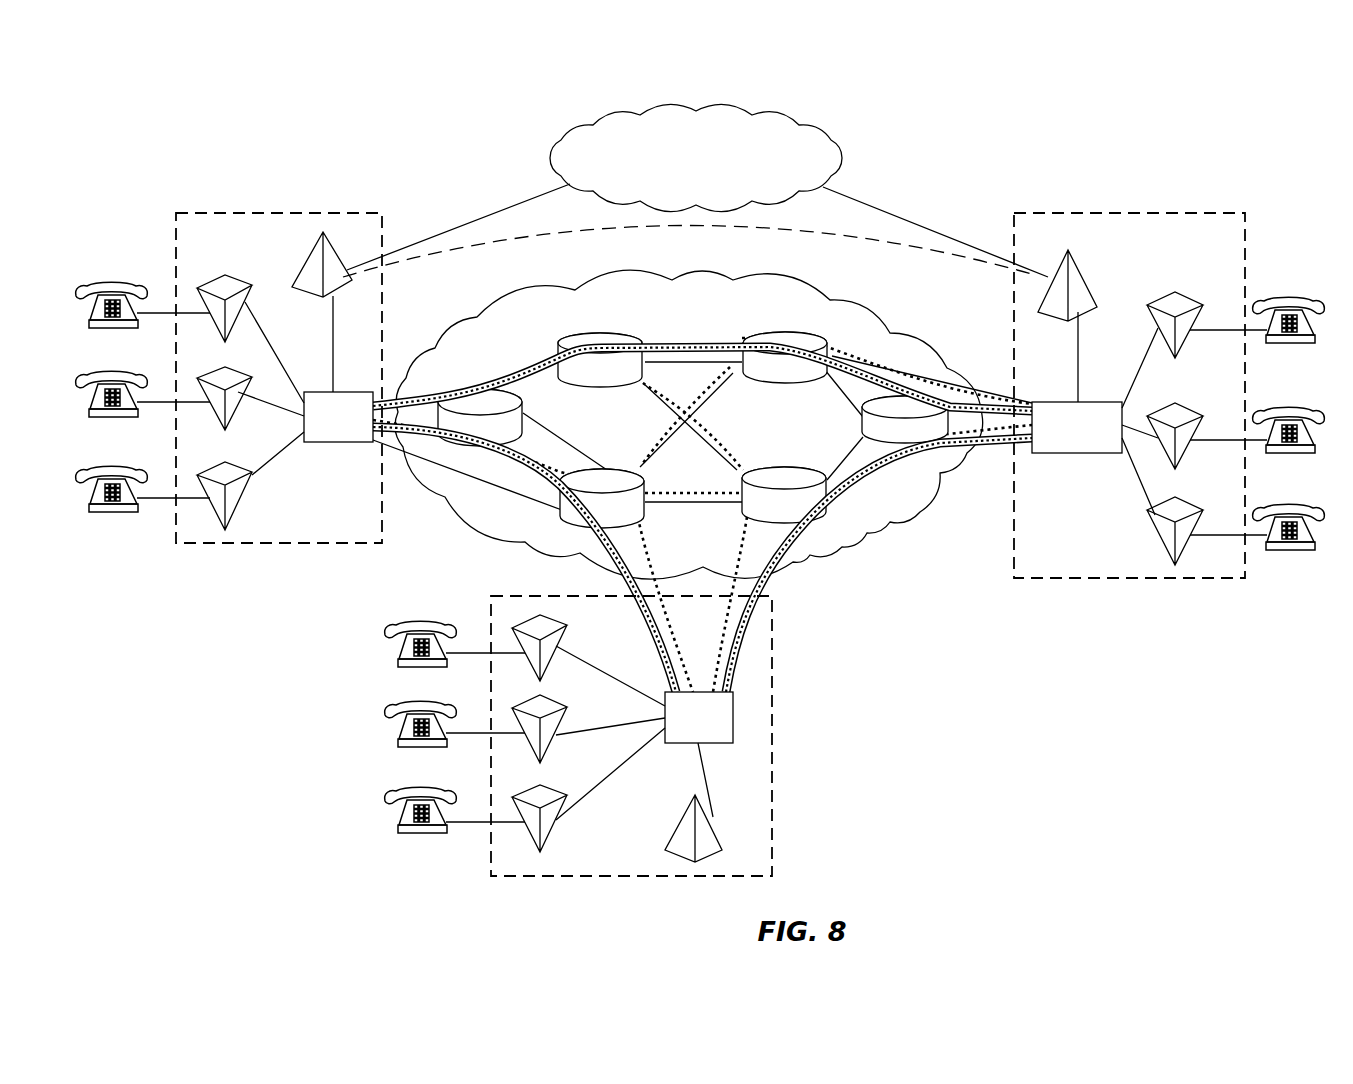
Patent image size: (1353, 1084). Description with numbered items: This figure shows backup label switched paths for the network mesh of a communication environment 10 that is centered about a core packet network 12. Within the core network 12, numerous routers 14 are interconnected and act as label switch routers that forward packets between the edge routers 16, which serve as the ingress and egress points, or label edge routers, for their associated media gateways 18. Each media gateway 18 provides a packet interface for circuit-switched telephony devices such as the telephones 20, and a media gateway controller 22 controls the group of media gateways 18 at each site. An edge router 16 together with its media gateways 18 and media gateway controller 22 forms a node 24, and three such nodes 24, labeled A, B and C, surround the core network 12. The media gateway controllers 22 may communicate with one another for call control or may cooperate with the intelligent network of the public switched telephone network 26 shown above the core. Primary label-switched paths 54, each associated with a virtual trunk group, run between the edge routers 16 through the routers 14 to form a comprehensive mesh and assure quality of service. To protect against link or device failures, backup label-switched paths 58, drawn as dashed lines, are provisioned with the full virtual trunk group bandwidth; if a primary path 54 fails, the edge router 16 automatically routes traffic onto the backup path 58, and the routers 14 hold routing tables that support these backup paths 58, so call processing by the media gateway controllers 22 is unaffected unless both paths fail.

The communication environment 10 is at (1020, 120).
The core packet network 12 is at (661, 336).
The routers 14 is at (581, 332).
The edge routers 16 is at (712, 728).
The media gateways 18 is at (550, 788).
The telephones 20 is at (450, 849).
The media gateway controllers 22 is at (716, 834).
The node 24 is at (594, 855).
The public switched telephone network 26 is at (676, 183).
The label-switched path 54 is at (706, 345).
The backup label-switched path 58 is at (521, 459).